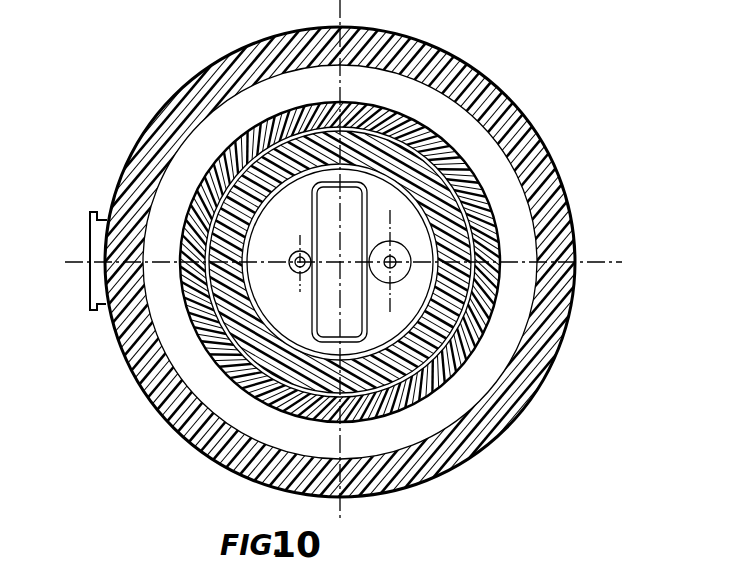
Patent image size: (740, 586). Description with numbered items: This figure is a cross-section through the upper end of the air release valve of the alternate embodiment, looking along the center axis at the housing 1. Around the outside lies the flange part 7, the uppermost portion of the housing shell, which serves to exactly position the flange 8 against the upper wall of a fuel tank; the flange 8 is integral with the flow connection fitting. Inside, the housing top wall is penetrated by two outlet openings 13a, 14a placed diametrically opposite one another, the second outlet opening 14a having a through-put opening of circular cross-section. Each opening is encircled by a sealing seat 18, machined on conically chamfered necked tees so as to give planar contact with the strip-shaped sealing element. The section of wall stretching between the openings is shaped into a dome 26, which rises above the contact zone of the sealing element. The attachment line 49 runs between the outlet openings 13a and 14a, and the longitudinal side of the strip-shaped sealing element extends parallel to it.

The housing 1 is at (474, 466).
The flange part 7 is at (237, 453).
The flange 8 is at (566, 305).
The outlet opening 13a is at (293, 270).
The second outlet opening 14a is at (407, 273).
The sealing seat 18 is at (293, 255).
The dome 26 is at (343, 218).
The attachment line 49 is at (519, 262).